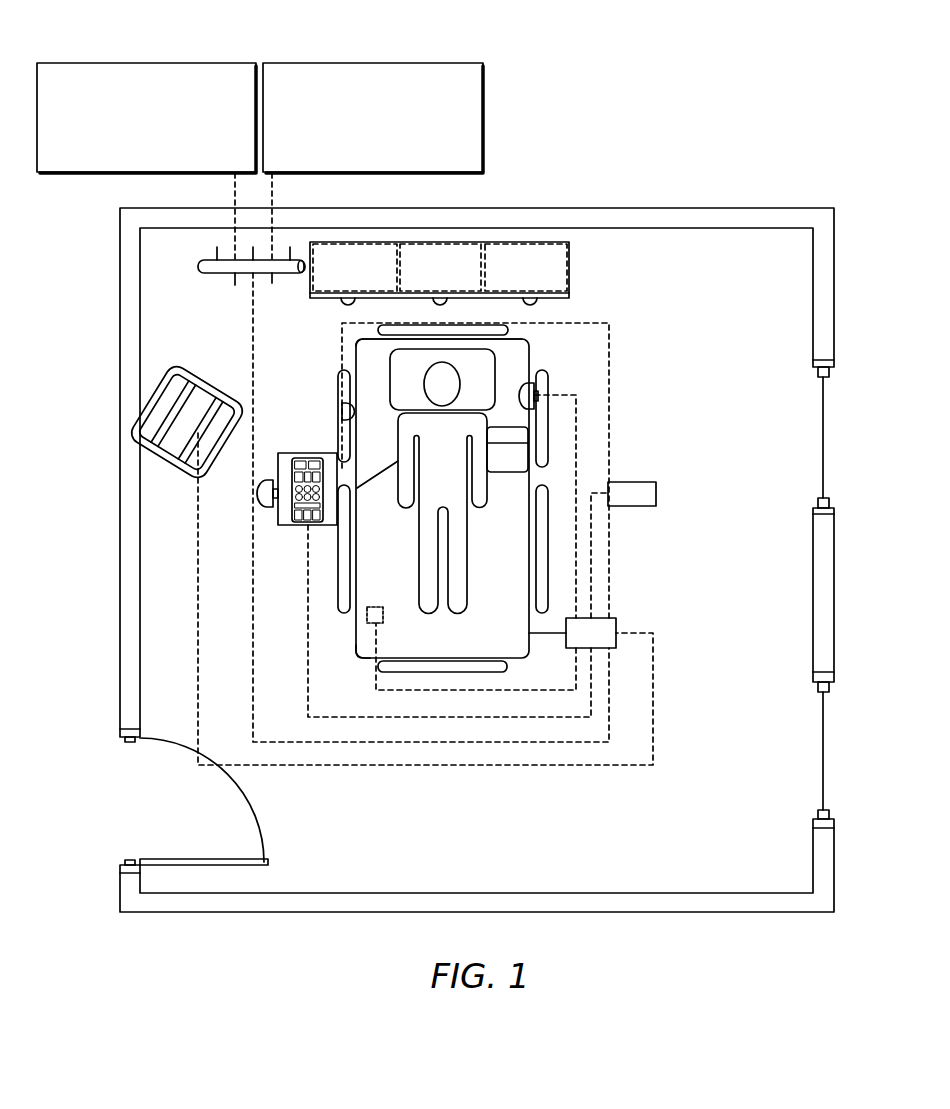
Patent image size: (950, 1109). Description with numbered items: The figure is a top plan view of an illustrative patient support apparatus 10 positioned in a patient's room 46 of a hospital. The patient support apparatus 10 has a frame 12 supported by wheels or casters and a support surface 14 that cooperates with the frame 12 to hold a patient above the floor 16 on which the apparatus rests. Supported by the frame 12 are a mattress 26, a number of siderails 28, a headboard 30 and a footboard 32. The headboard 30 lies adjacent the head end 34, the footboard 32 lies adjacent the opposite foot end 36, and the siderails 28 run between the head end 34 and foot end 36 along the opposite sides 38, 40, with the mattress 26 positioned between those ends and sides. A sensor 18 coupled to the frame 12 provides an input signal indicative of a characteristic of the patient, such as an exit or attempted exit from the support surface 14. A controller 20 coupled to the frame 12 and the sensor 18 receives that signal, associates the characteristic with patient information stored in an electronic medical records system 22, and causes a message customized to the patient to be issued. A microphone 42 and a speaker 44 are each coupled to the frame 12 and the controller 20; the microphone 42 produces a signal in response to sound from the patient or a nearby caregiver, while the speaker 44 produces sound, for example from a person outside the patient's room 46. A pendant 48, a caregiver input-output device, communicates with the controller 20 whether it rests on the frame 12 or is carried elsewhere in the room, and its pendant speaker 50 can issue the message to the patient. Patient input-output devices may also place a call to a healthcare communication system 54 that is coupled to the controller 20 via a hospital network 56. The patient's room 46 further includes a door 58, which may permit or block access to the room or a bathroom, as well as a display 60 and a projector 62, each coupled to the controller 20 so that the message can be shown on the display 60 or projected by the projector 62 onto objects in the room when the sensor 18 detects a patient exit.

The patient support apparatus 10 is at (598, 314).
The frame 12 is at (332, 336).
The support surface 14 is at (508, 578).
The floor 16 is at (790, 628).
The sensor 18 is at (366, 616).
The controller 20 is at (603, 618).
The electronic medical records system 22 is at (147, 63).
The mattress 26 is at (517, 348).
The siderails 28 is at (338, 392).
The headboard 30 is at (445, 328).
The footboard 32 is at (472, 675).
The head end 34 is at (514, 328).
The foot end 36 is at (358, 658).
The side 38 is at (356, 360).
The side 40 is at (530, 360).
The microphone 42 is at (547, 398).
The speaker 44 is at (341, 412).
The patient's room 46 is at (624, 248).
The pendant 48 is at (297, 526).
The pendant speaker 50 is at (258, 493).
The healthcare communication system 54 is at (354, 63).
The hospital network 56 is at (212, 273).
The door 58 is at (266, 838).
The display 60 is at (212, 410).
The projector 62 is at (632, 482).